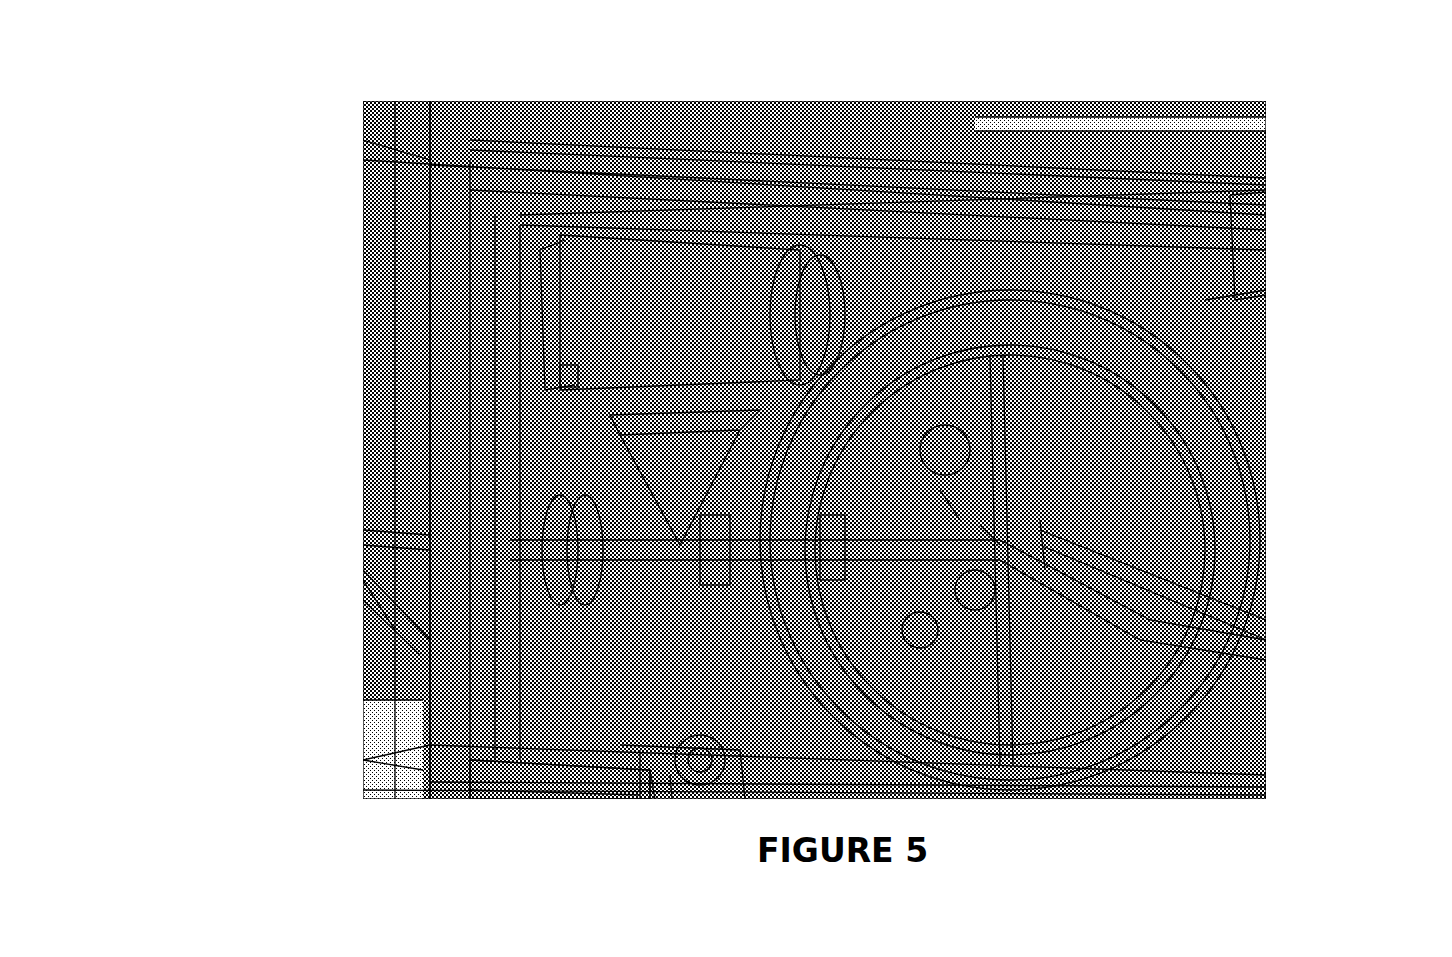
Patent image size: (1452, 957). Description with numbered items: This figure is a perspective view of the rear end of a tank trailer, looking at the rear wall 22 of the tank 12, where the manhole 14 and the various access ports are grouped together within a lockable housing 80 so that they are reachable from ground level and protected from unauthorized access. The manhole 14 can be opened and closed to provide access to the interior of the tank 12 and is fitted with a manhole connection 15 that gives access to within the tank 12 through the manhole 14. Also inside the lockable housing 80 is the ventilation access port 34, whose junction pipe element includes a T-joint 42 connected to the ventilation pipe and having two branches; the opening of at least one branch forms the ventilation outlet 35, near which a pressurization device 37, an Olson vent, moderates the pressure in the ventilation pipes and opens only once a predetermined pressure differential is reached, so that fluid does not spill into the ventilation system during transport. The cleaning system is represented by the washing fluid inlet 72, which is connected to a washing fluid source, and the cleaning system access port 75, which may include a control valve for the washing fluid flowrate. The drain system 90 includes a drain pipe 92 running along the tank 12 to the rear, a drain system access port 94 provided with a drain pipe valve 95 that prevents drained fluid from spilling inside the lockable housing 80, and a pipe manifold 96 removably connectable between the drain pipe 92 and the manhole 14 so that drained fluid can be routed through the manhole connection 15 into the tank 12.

The tank 12 is at (1210, 300).
The manhole 14 is at (1120, 455).
The manhole connection 15 is at (1205, 400).
The rear wall 22 is at (383, 386).
The ventilation access port 34 is at (898, 128).
The ventilation outlet 35 is at (1040, 122).
The pressurization device 37 is at (1215, 197).
The T-joint 42 is at (668, 250).
The washing fluid inlet 72 is at (660, 796).
The cleaning system access port 75 is at (682, 772).
The lockable housing 80 is at (383, 190).
The drain system 90 is at (958, 796).
The drain pipe 92 is at (365, 535).
The drain system access port 94 is at (496, 797).
The drain pipe valve 95 is at (368, 776).
The pipe manifold 96 is at (367, 600).